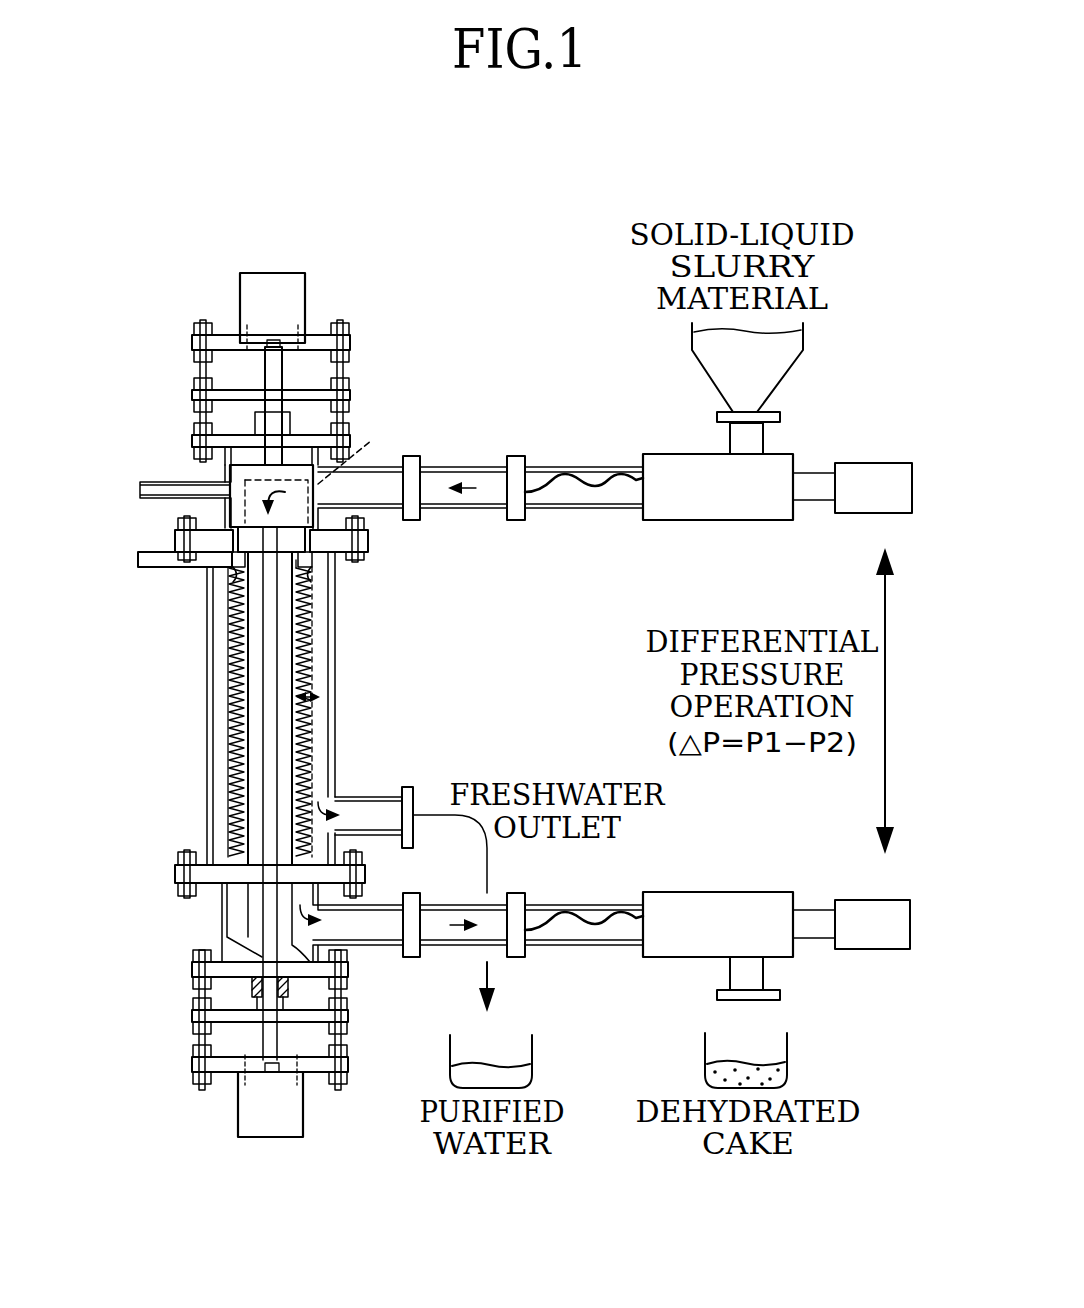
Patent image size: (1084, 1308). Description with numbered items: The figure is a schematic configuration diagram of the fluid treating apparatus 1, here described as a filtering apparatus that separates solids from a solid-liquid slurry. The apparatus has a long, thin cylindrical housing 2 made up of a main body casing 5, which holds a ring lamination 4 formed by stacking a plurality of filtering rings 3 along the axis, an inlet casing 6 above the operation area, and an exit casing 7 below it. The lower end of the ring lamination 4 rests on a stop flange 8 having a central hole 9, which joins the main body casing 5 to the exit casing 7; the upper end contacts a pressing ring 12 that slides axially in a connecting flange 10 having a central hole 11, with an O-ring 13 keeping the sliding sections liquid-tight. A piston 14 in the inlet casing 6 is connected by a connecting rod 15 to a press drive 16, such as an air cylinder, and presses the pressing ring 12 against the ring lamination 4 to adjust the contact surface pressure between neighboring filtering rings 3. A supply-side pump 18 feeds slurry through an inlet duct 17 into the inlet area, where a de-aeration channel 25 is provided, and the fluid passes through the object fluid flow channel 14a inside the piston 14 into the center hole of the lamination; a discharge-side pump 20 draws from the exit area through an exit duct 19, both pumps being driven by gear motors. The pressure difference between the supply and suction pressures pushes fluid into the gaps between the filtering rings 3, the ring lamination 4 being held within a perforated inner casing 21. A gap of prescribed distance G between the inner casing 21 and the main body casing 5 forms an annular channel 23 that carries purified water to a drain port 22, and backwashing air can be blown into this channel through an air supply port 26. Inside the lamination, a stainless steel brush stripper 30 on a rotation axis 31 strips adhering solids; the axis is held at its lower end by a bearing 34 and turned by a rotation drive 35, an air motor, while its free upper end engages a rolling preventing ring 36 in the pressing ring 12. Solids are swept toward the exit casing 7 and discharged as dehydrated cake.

The fluid treating apparatus 1 is at (622, 186).
The housing 2 is at (177, 752).
The filtering ring 3 is at (236, 648).
The ring lamination 4 is at (232, 712).
The main body casing 5 is at (212, 612).
The inlet casing 6 is at (224, 508).
The exit casing 7 is at (222, 912).
The stop flange 8 is at (177, 872).
The hole 9 is at (256, 883).
The connecting flange 10 is at (178, 541).
The hole 11 is at (232, 570).
The pressing ring 12 is at (328, 575).
The O-ring 13 is at (322, 548).
The piston 14 is at (240, 458).
The object fluid flow channel 14a is at (369, 448).
The connecting rod 15 is at (270, 378).
The press drive 16 is at (258, 288).
The inlet duct 17 is at (392, 520).
The supply-side pump 18 is at (783, 520).
The exit duct 19 is at (380, 942).
The discharge-side pump 20 is at (663, 960).
The inner casing 21 is at (312, 641).
The drain port 22 is at (378, 800).
The annular channel 23 is at (320, 712).
The de-aeration channel 25 is at (160, 483).
The air supply port 26 is at (150, 562).
The stripper 30 is at (250, 795).
The rotation axis 31 is at (270, 958).
The bearing 34 is at (252, 987).
The rotation drive 35 is at (250, 1112).
The rolling preventing ring 36 is at (303, 580).
The gap of prescribed distance G is at (322, 692).